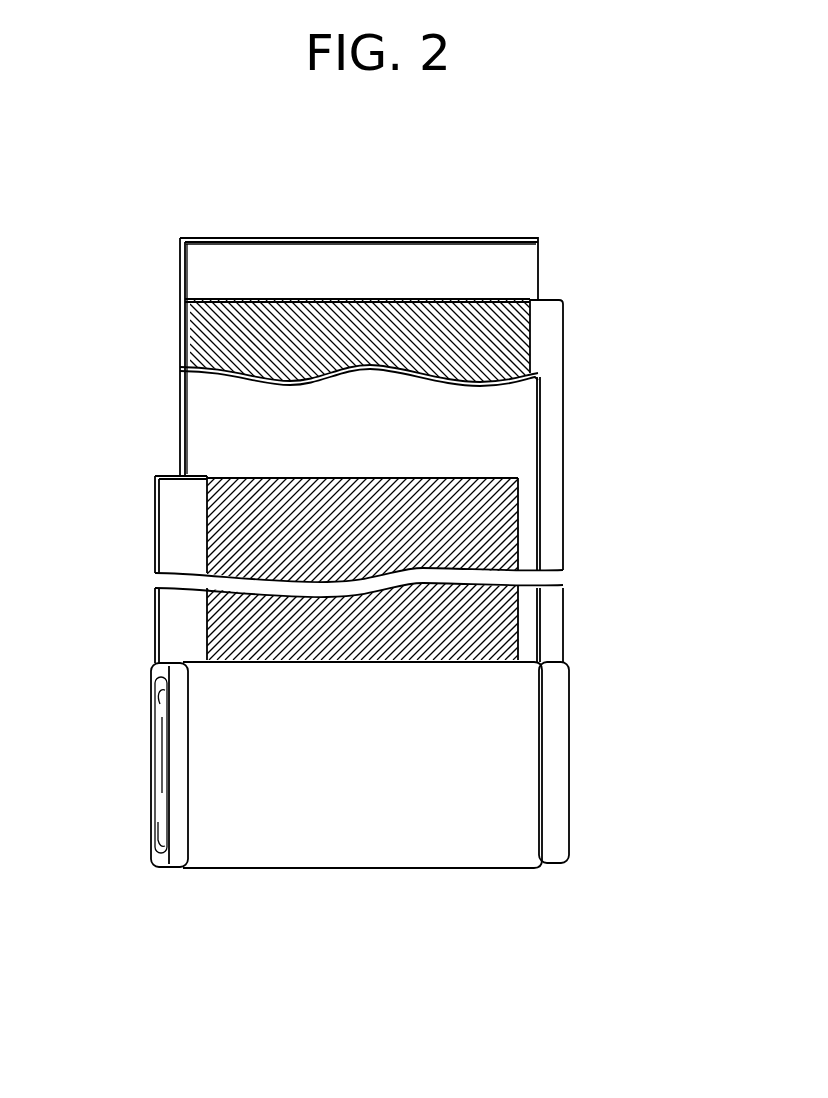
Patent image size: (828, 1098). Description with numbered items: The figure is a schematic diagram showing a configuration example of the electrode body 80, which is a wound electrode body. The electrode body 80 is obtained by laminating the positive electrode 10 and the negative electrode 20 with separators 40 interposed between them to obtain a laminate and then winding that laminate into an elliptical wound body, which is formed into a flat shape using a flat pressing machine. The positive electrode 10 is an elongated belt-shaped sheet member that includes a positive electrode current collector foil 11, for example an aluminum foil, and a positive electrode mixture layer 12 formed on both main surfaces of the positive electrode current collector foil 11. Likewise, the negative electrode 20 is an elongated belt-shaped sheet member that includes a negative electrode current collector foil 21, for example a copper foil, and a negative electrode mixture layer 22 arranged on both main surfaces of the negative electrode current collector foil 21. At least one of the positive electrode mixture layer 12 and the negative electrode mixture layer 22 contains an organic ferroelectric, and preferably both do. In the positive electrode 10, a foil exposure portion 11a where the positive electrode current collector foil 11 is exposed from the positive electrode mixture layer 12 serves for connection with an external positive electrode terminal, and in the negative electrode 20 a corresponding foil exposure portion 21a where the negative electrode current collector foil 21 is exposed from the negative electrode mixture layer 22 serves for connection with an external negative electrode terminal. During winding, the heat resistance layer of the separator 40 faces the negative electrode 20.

The positive electrode 10 is at (300, 523).
The positive electrode current collector foil 11 is at (175, 476).
The positive electrode mixture layer 12 is at (234, 478).
The negative electrode 20 is at (434, 437).
The negative electrode current collector foil 21 is at (548, 300).
The negative electrode mixture layer 22 is at (493, 304).
The separator 40 is at (257, 240).
The foil exposure portion 11a is at (180, 837).
The foil exposure portion 21a is at (553, 837).
The electrode body 80 is at (363, 613).